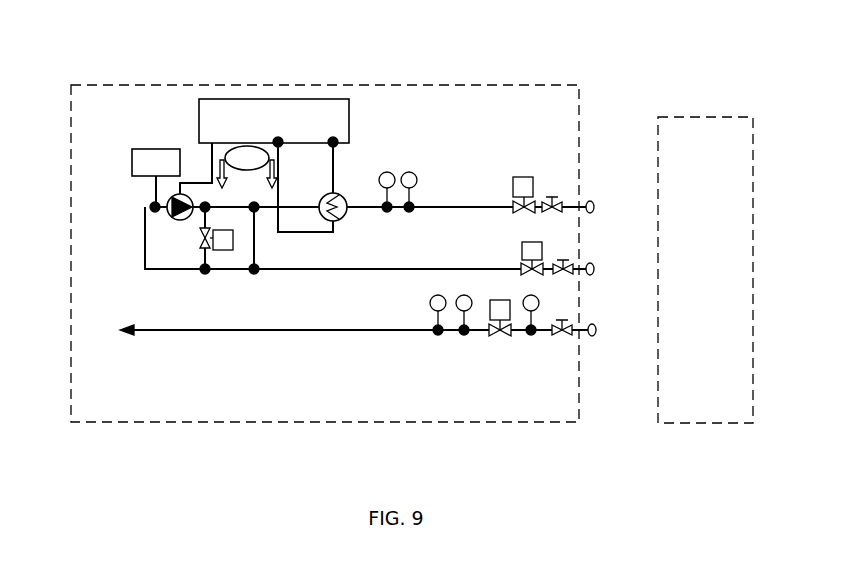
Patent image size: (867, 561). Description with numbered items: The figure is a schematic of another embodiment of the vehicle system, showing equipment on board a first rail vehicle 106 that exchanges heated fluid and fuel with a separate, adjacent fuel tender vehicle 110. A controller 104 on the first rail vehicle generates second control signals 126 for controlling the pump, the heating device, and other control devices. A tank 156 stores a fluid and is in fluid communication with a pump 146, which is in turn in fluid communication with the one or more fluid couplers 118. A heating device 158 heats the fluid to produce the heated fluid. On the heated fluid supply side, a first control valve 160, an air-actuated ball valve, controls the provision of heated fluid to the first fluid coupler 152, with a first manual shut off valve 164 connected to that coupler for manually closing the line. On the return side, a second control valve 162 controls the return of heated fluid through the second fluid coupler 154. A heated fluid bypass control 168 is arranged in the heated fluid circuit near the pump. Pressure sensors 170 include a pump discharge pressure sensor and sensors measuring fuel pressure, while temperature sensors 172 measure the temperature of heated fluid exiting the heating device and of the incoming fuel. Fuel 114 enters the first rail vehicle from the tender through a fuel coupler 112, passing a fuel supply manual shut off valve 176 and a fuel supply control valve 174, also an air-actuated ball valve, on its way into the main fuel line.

The controller 104 is at (230, 98).
The first rail vehicle 106 is at (245, 422).
The fuel tender vehicle 110 is at (690, 424).
The fuel coupler 112 is at (593, 338).
The fuel 114 is at (157, 333).
The fluid couplers 118 is at (600, 120).
The second control signals 126 is at (248, 146).
The pump 146 is at (170, 207).
The first fluid coupler 152 is at (590, 200).
The second fluid coupler 154 is at (590, 262).
The tank 156 is at (152, 148).
The heating device 158 is at (345, 215).
The first control valve 160 is at (511, 187).
The second control valve 162 is at (521, 250).
The first manual shut off valve 164 is at (551, 196).
The heated fluid bypass control 168 is at (222, 250).
The pressure sensors 170 is at (411, 172).
The temperature sensors 172 is at (384, 172).
The fuel supply control valve 174 is at (493, 336).
The fuel supply manual shut off valve 176 is at (556, 338).